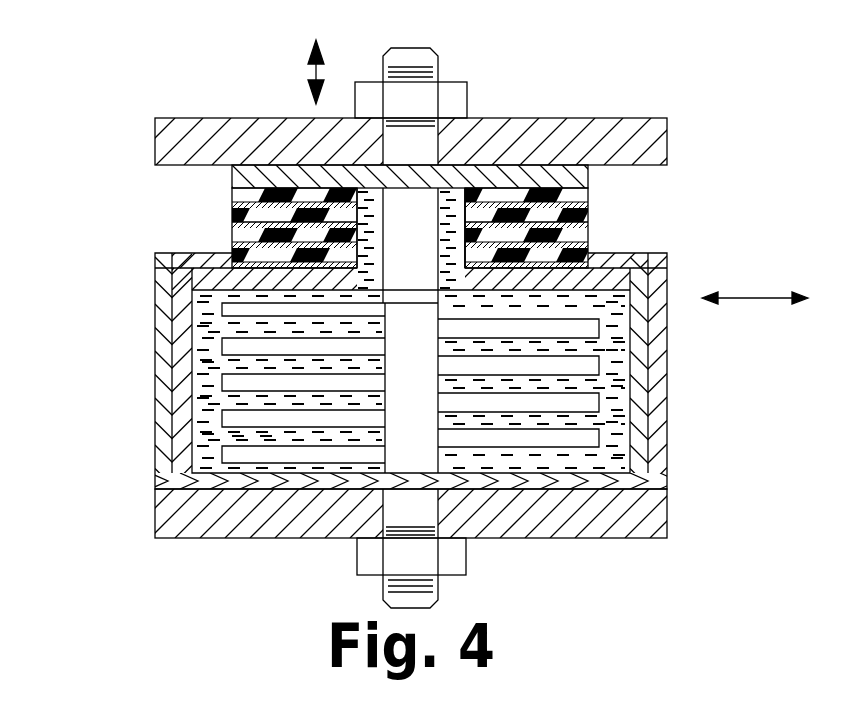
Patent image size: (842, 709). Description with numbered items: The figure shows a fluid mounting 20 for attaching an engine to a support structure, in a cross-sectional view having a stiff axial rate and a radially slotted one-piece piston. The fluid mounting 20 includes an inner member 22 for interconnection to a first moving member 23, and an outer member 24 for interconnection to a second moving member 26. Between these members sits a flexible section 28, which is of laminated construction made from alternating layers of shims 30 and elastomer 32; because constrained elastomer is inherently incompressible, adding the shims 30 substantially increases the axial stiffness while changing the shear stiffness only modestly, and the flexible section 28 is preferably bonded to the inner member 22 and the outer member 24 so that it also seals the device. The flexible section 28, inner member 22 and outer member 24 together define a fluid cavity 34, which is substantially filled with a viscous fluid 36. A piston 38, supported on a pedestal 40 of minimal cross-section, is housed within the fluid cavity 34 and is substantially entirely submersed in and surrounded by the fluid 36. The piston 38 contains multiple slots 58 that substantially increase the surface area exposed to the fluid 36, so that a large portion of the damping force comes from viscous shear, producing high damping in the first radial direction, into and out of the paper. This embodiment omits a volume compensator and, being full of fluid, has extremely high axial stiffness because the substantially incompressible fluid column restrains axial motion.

The fluid mounting 20 is at (652, 110).
The first moving member 23 is at (667, 132).
The inner member 22 is at (620, 193).
The shims 30 is at (232, 200).
The elastomer 32 is at (232, 237).
The flexible section 28 is at (590, 222).
The pedestal 40 is at (433, 256).
The fluid cavity 34 is at (200, 296).
The outer member 24 is at (667, 335).
The piston 38 is at (433, 366).
The fluid 36 is at (623, 405).
The slots 58 is at (250, 428).
The second moving member 26 is at (667, 505).